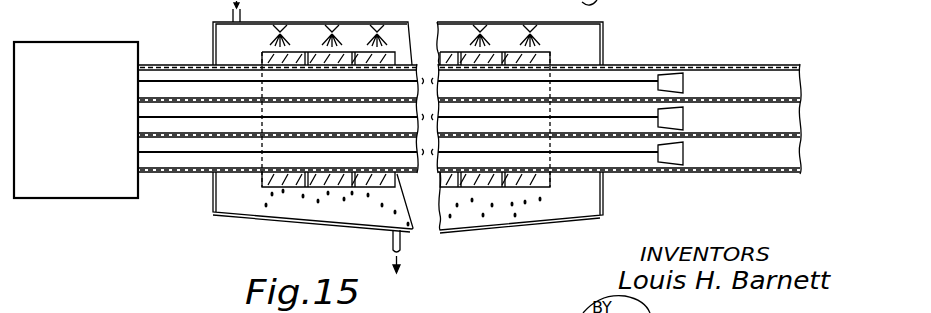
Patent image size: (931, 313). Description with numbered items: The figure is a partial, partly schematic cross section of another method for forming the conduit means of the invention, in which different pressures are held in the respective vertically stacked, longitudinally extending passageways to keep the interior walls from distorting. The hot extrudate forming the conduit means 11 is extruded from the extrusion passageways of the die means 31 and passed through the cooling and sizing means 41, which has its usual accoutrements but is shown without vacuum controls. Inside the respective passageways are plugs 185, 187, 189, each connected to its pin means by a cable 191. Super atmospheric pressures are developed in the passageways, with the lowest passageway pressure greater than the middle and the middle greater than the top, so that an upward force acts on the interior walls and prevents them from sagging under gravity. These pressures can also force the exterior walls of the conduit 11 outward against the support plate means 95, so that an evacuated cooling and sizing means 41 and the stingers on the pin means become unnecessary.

The die means 31 is at (84, 48).
The conduit means 11 is at (182, 64).
The support plate means 95 is at (505, 56).
The cooling and sizing means 41 is at (212, 204).
The cables 191 is at (181, 152).
The plug 189 is at (683, 83).
The plug 187 is at (683, 118).
The plug 185 is at (683, 153).